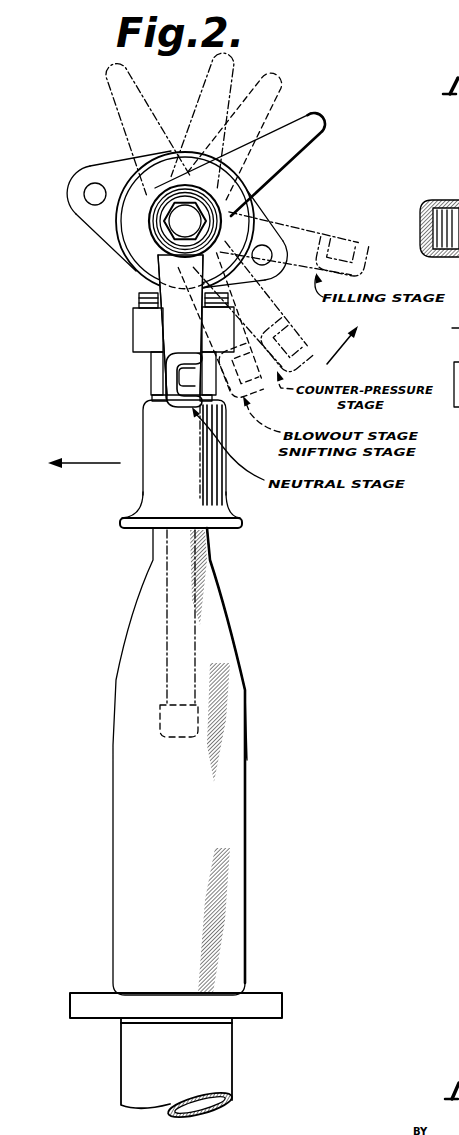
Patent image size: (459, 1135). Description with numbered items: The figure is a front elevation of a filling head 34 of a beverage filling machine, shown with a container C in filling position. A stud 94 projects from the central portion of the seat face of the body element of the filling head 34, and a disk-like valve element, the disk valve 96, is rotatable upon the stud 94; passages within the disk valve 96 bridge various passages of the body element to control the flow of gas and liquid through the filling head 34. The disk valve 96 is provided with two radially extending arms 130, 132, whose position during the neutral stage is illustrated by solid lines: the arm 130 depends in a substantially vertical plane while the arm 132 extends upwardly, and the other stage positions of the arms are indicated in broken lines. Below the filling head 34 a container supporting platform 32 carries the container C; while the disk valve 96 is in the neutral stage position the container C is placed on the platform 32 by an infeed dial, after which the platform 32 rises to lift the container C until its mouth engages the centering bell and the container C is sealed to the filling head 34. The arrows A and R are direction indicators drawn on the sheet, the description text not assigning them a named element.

The arm 132 is at (272, 92).
The stud 94 is at (192, 220).
The filling head 34 is at (103, 232).
The disk valve 96 is at (138, 242).
The arm 130 is at (172, 352).
The bottle supporting platform 32 is at (262, 1000).
The container C is at (223, 655).
The direction arrow A is at (90, 463).
The rotation arrow R is at (350, 345).